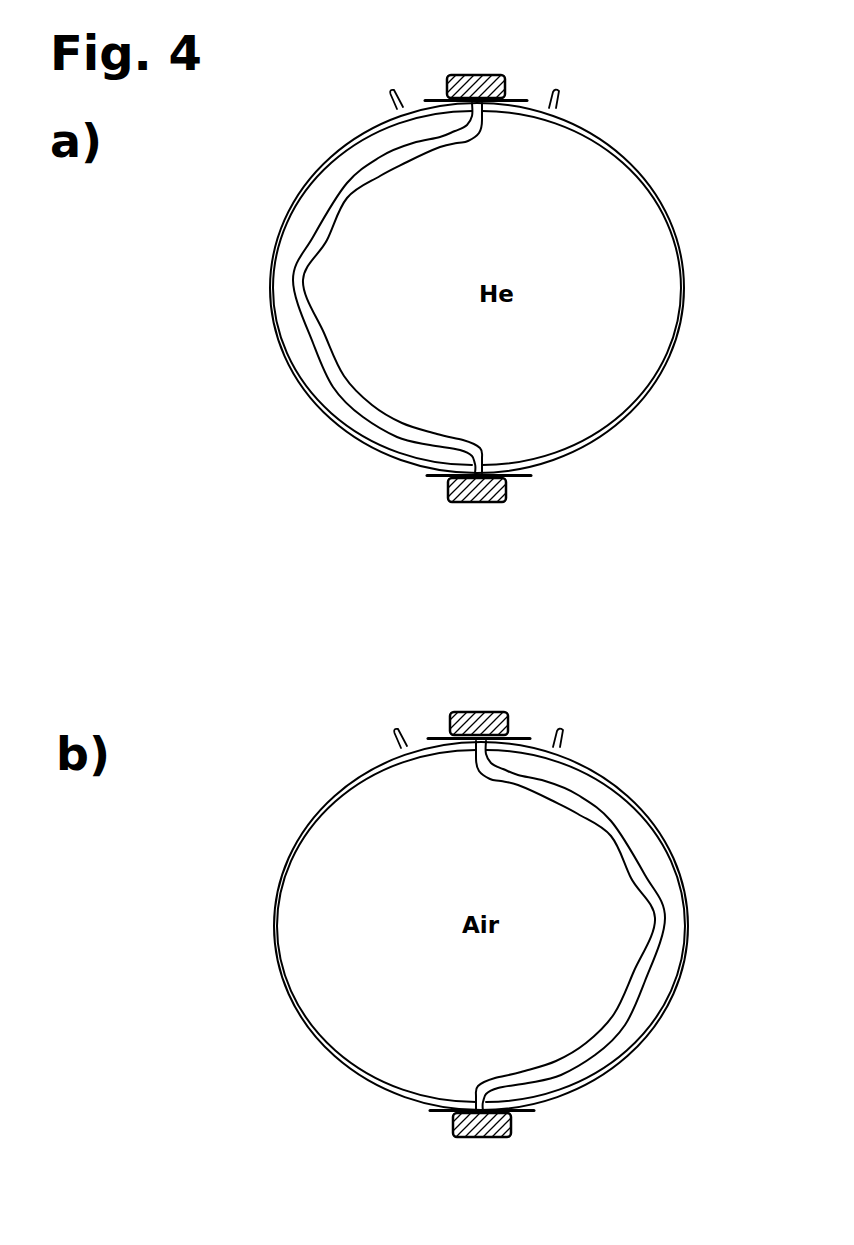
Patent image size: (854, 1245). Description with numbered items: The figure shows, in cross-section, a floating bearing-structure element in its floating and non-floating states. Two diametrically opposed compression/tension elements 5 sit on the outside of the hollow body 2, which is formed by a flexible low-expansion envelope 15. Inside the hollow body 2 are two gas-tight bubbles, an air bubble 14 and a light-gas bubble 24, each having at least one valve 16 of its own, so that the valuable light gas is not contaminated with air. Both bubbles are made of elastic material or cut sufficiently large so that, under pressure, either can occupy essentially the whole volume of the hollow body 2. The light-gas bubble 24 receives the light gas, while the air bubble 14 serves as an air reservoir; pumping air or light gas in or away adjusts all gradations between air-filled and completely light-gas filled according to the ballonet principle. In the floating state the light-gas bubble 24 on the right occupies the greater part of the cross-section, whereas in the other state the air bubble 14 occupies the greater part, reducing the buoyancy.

In FIG. 4a, the hollow body 2 is at (706, 326).
In FIG. 4b, the hollow body 2 is at (710, 963).
In FIG. 4a, the compression/tension element 5 is at (469, 74).
In FIG. 4b, the compression/tension element 5 is at (491, 711).
In FIG. 4a, the air bubble 14 is at (276, 247).
In FIG. 4b, the air bubble 14 is at (282, 882).
In FIG. 4a, the flexible low-expansion envelope 15 is at (652, 183).
In FIG. 4b, the flexible low-expansion envelope 15 is at (655, 820).
In FIG. 4a, the valve 16 is at (392, 100).
In FIG. 4b, the valve 16 is at (396, 738).
In FIG. 4a, the light-gas bubble 24 is at (683, 250).
In FIG. 4b, the light-gas bubble 24 is at (688, 888).